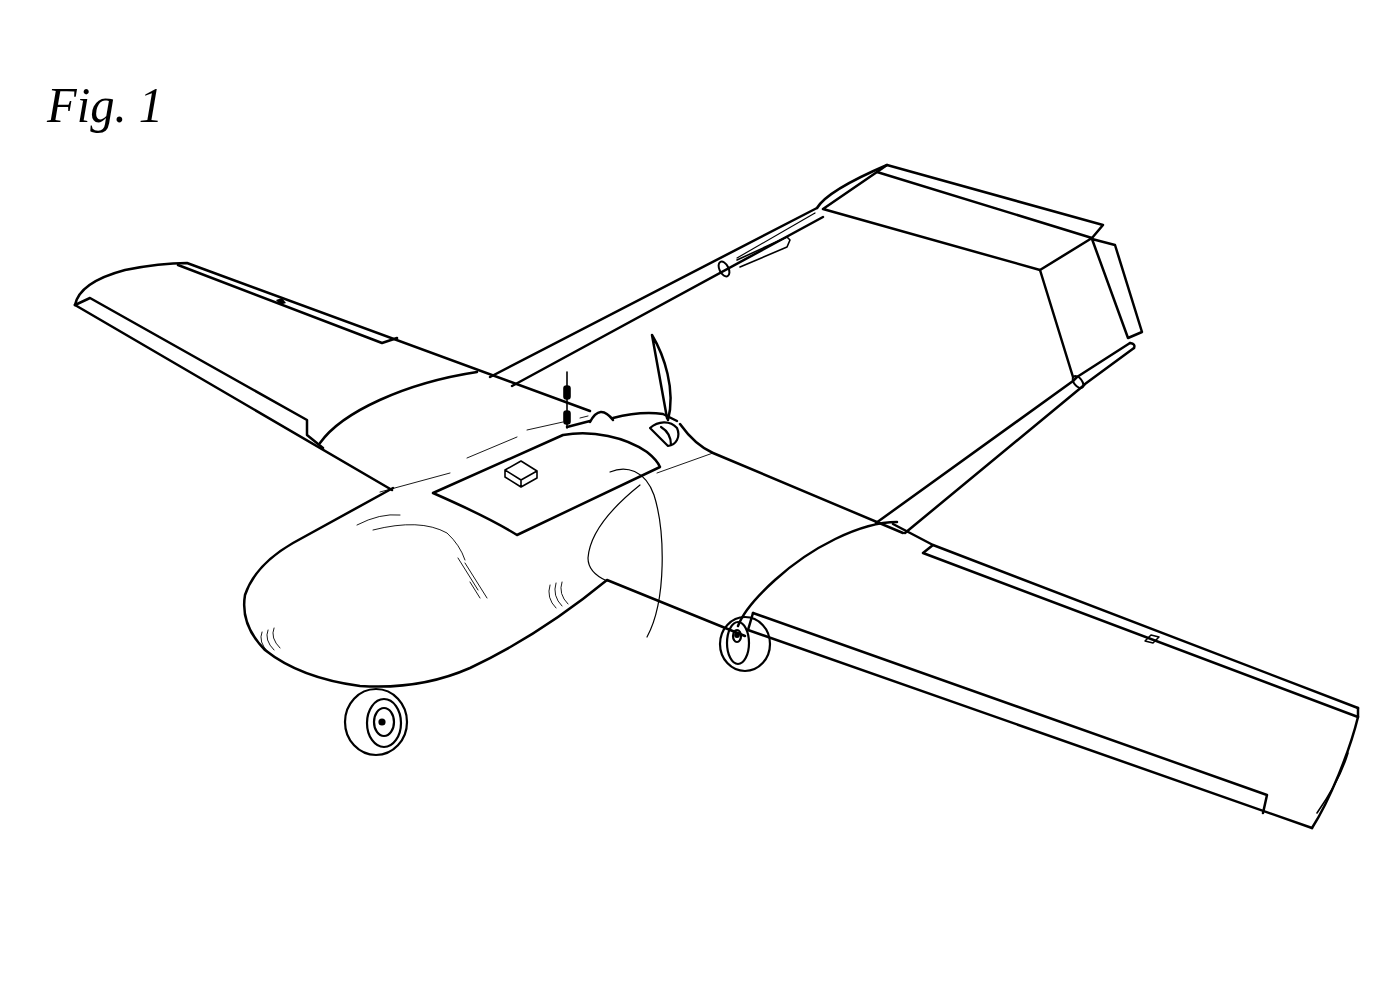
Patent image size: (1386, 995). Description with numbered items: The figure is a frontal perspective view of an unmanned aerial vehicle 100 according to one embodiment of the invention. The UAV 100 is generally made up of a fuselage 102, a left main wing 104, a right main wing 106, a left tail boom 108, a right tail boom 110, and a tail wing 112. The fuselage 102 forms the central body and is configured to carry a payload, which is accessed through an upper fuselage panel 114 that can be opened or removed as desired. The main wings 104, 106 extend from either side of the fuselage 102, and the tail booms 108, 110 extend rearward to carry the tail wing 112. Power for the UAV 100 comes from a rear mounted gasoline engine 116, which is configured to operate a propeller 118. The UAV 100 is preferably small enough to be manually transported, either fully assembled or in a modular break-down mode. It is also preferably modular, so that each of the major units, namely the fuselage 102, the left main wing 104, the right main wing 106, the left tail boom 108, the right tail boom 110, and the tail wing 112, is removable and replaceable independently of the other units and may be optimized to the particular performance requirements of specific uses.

The unmanned aerial vehicle 100 is at (490, 190).
The fuselage 102 is at (310, 570).
The left main wing 104 is at (1100, 637).
The right main wing 106 is at (240, 302).
The left tail boom 108 is at (1057, 410).
The right tail boom 110 is at (663, 285).
The tail wing 112 is at (997, 223).
The upper fuselage panel 114 is at (657, 628).
The rear mounted gasoline engine 116 is at (675, 423).
The propeller 118 is at (650, 345).